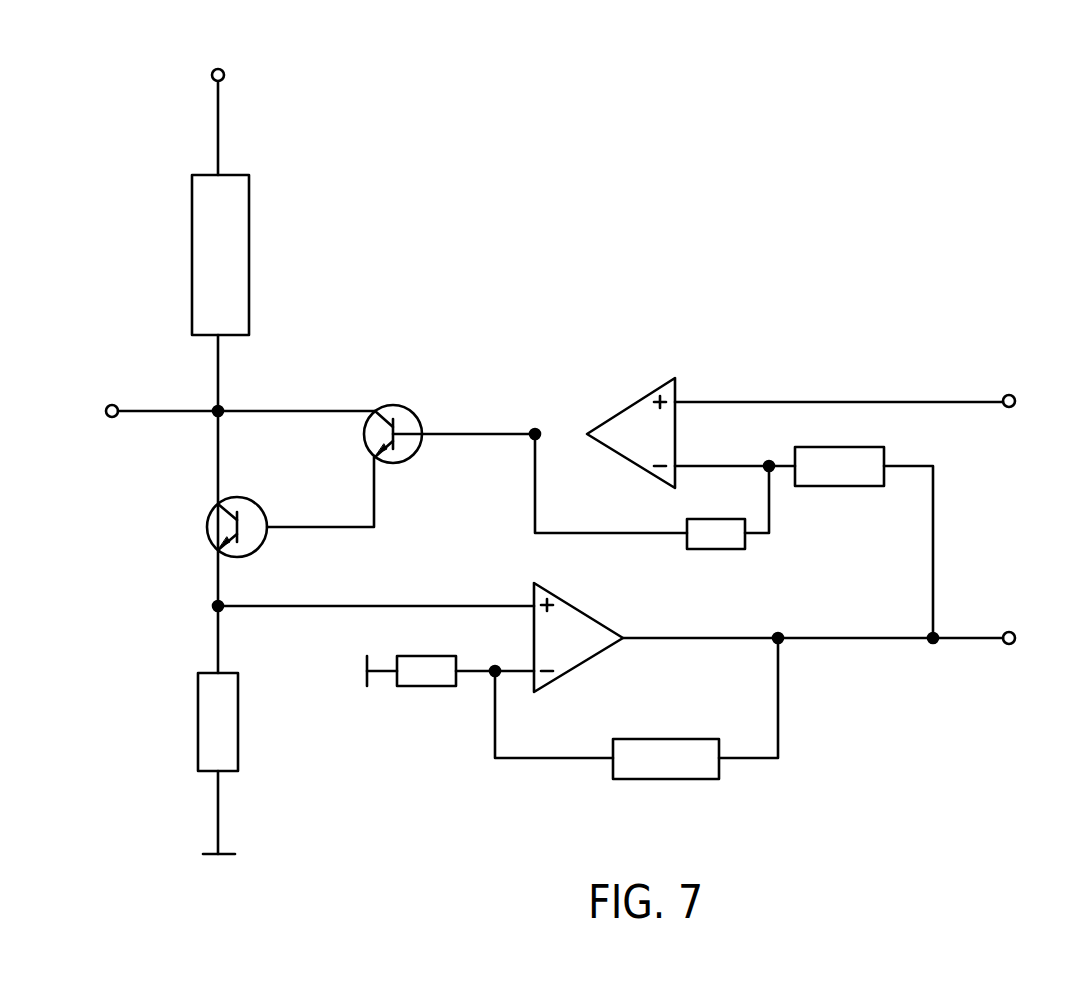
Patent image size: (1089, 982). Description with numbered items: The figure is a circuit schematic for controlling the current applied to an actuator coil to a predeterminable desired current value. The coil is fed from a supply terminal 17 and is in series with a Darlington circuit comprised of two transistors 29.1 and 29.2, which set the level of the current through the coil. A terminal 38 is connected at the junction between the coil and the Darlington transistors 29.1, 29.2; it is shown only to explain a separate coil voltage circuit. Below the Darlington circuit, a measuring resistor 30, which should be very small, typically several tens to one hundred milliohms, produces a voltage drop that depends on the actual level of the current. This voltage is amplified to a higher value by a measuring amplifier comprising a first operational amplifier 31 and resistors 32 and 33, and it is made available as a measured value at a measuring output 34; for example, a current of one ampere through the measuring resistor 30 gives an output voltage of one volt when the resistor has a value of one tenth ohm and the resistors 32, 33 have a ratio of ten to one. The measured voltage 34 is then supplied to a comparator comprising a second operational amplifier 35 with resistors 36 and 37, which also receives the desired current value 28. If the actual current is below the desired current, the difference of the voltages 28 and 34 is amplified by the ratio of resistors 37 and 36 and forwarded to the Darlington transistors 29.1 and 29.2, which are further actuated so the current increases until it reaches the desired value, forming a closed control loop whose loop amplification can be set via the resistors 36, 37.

The supply terminal 17 is at (224, 73).
The terminal 38 is at (105, 417).
The transistor 29.1 is at (390, 406).
The transistor 29.2 is at (206, 527).
The measuring resistor 30 is at (224, 712).
The second operational amplifier 35 is at (622, 408).
The resistor 37 is at (724, 540).
The resistor 36 is at (851, 477).
The desired current value 28 is at (1012, 393).
The first operational amplifier 31 is at (585, 625).
The resistor 33 is at (424, 677).
The resistor 32 is at (670, 770).
The measuring output 34 is at (1012, 631).